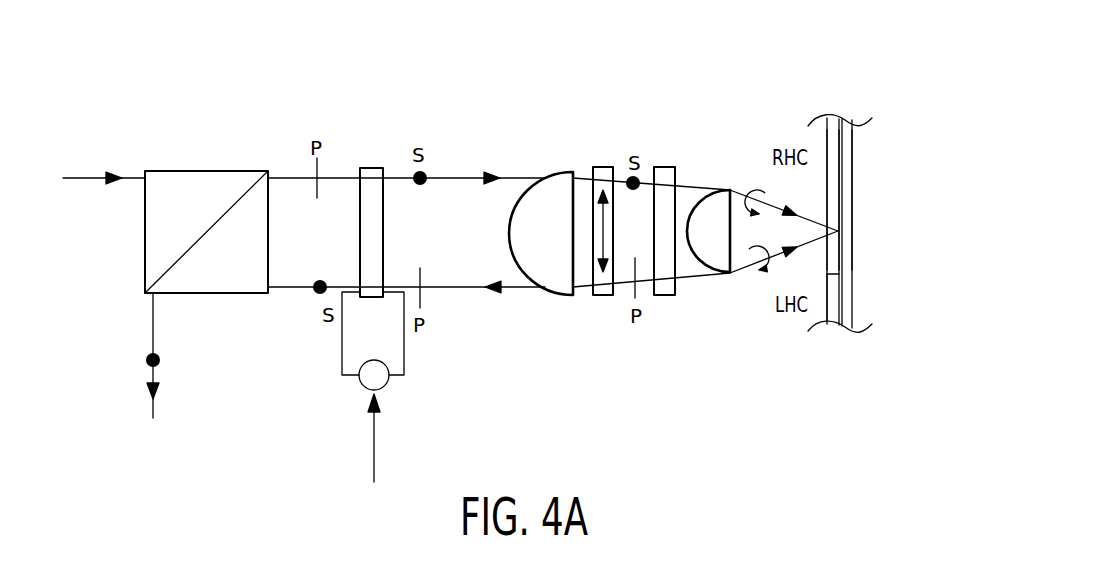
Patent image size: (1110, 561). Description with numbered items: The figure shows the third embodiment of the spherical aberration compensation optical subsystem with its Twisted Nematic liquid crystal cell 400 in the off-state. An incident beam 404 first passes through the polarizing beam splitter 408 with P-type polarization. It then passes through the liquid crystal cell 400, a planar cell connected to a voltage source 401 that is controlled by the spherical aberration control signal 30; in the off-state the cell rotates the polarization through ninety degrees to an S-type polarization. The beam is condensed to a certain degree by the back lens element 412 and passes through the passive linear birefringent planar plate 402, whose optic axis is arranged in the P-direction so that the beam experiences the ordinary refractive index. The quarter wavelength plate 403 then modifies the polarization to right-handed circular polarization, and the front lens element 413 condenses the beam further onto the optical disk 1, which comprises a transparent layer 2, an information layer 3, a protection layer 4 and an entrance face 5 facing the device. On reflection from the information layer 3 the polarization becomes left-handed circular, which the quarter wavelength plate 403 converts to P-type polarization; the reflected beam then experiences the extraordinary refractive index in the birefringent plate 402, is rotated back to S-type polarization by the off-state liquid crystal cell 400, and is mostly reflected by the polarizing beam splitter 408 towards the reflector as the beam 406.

The optical disk 1 is at (868, 104).
The transparent layer 2 is at (832, 153).
The information layer 3 is at (839, 180).
The protection layer 4 is at (846, 201).
The disk entrance face 5 is at (839, 275).
The spherical aberration control signal 30 is at (374, 437).
The Twisted Nematic liquid crystal cell 400 is at (372, 168).
The voltage source 401 is at (386, 384).
The passive linear birefringent planar plate 402 is at (603, 167).
The polarization modifying element 403 is at (667, 167).
The incident beam 404 is at (88, 184).
The reflected beam 406 is at (150, 378).
The polarizing beam splitter 408 is at (206, 171).
The back lens element 412 is at (556, 170).
The front lens element 413 is at (715, 191).